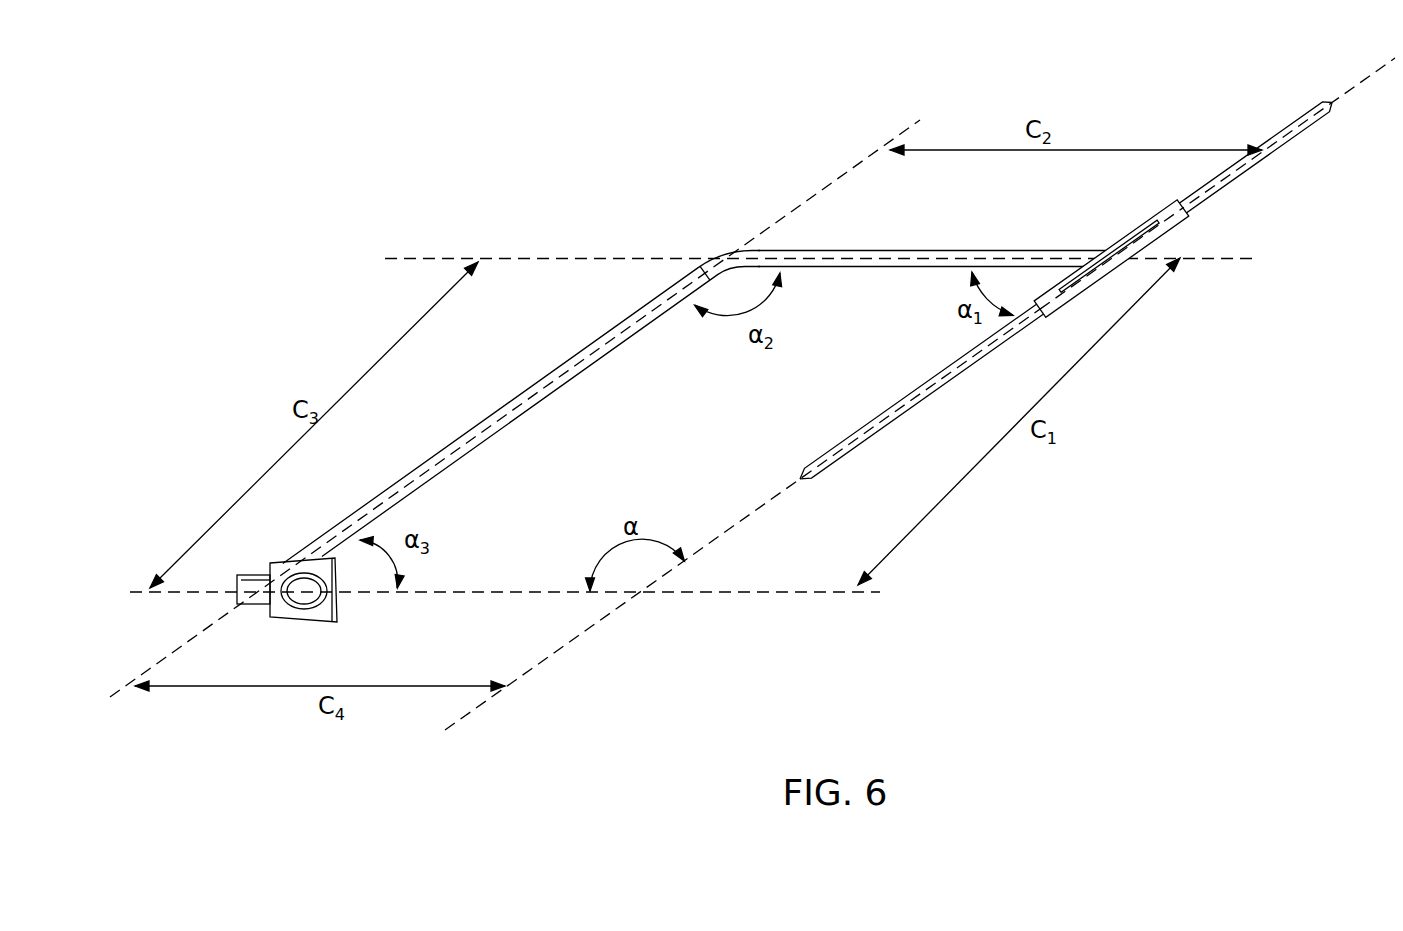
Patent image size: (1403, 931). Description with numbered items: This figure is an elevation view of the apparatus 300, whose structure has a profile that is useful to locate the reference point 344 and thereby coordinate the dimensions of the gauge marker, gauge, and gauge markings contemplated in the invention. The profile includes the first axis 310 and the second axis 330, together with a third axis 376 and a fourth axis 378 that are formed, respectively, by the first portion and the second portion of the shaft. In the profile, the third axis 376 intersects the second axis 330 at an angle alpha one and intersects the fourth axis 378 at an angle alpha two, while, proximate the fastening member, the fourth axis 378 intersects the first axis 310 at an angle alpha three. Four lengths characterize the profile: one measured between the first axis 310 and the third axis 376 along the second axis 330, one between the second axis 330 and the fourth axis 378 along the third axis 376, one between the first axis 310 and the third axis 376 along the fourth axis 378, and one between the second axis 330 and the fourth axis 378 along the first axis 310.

The apparatus 300 is at (358, 150).
The first axis 310 is at (750, 597).
The second axis 330 is at (728, 530).
The reference point 344 is at (1113, 264).
The third axis 376 is at (925, 253).
The fourth axis 378 is at (510, 410).